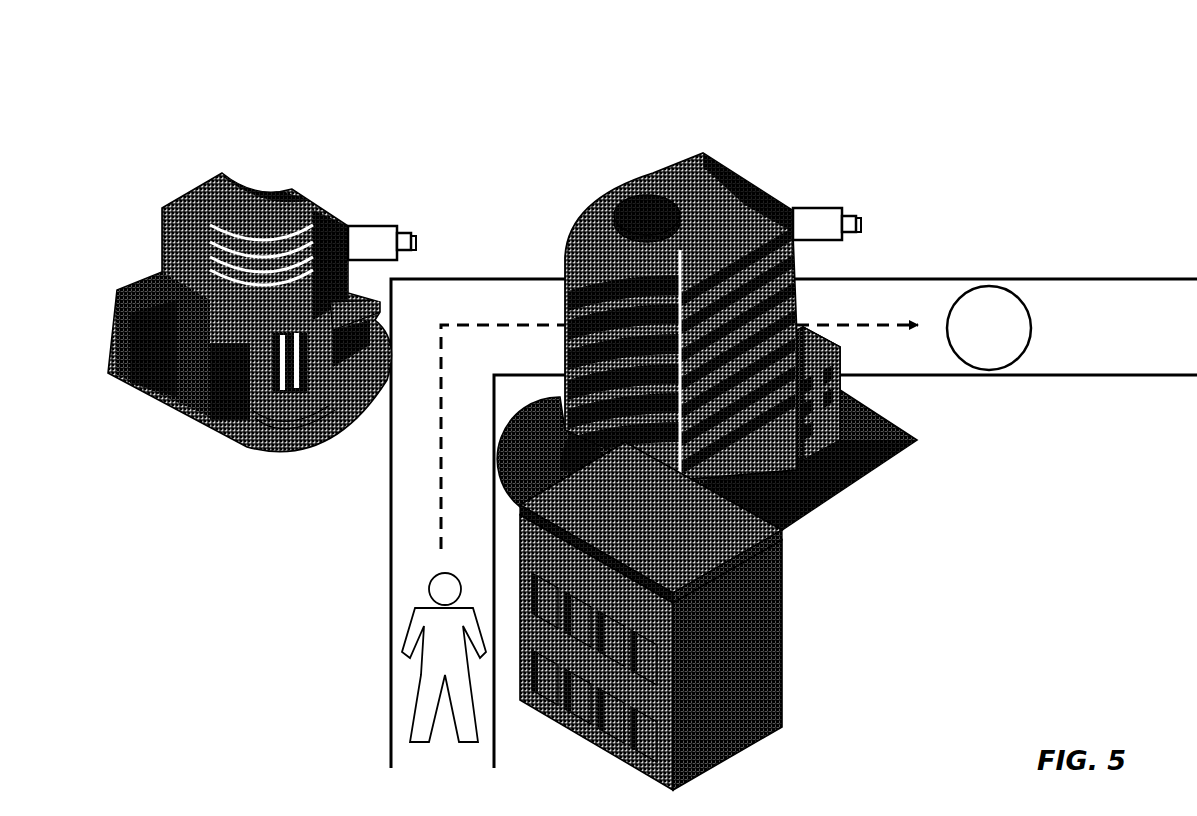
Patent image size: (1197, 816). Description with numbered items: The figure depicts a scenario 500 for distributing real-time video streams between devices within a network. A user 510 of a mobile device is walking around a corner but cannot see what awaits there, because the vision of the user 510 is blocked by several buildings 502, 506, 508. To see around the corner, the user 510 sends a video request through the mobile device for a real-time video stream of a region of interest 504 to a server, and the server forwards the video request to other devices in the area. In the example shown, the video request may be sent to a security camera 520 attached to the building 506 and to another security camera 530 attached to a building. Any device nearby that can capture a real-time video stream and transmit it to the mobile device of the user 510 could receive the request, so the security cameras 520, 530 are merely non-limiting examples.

The scenario 500 is at (1097, 78).
The building 502 is at (785, 588).
The region of interest 504 is at (989, 328).
The building 506 is at (240, 180).
The building 508 is at (728, 165).
The user 510 is at (440, 574).
The security camera 520 is at (380, 225).
The security camera 530 is at (822, 208).